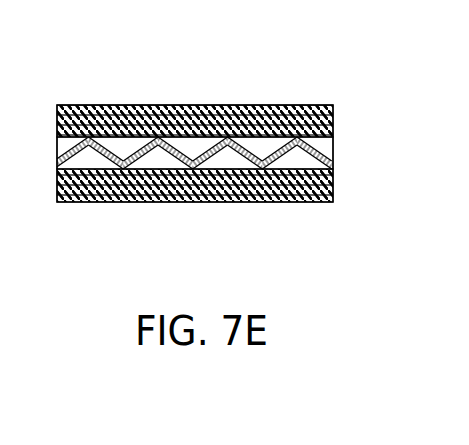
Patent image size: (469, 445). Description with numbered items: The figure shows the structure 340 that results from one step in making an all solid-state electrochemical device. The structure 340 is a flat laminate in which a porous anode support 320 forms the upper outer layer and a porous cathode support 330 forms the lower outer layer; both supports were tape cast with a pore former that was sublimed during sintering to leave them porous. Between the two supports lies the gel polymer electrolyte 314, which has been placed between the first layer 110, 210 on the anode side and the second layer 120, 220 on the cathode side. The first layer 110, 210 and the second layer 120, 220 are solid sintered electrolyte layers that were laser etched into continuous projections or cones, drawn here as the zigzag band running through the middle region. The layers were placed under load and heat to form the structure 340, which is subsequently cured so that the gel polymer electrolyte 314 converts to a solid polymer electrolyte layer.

The structure 340 is at (108, 78).
The porous anode support 320 is at (333, 111).
The porous cathode support 330 is at (302, 192).
The gel polymer electrolyte 314 is at (328, 163).
The first layer 110 is at (271, 146).
The first layer 210 is at (317, 147).
The second layer 120 is at (176, 191).
The second layer 220 is at (89, 158).